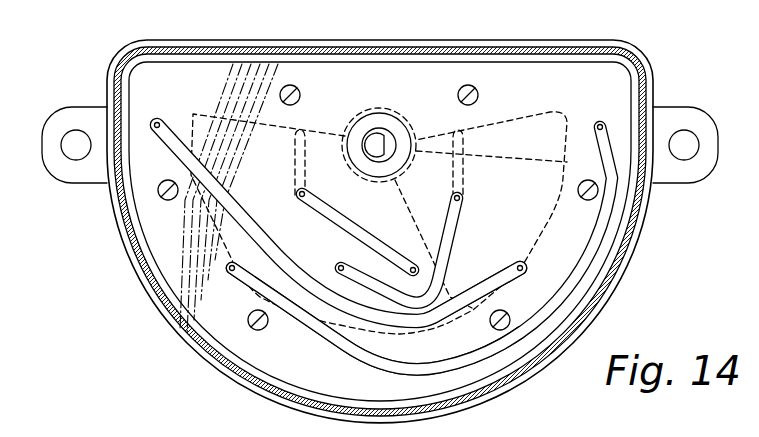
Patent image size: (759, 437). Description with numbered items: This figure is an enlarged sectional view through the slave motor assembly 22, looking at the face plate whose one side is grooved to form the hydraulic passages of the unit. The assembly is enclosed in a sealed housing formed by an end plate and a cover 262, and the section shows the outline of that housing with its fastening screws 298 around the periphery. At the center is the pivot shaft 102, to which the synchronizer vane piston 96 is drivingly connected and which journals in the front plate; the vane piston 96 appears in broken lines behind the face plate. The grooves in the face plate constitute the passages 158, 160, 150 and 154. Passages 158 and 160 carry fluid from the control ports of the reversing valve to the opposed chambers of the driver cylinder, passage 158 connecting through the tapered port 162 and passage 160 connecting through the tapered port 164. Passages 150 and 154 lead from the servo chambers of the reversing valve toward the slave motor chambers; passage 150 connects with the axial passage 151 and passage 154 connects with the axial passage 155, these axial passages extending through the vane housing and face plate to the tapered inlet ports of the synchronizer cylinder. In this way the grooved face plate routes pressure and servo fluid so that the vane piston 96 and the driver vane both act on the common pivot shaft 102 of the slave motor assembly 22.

The slave motor assembly 22 is at (116, 249).
The cover 262 is at (137, 55).
The screws 298 is at (292, 86).
The pivot shaft 102 is at (383, 136).
The vane piston 96 is at (495, 154).
The tapered port 162 is at (463, 176).
The tapered port 164 is at (296, 158).
The axial passage 151 is at (160, 122).
The passage 150 is at (481, 290).
The passage 154 is at (403, 358).
The axial passage 155 is at (599, 124).
The passage 158 is at (452, 228).
The passage 160 is at (341, 222).